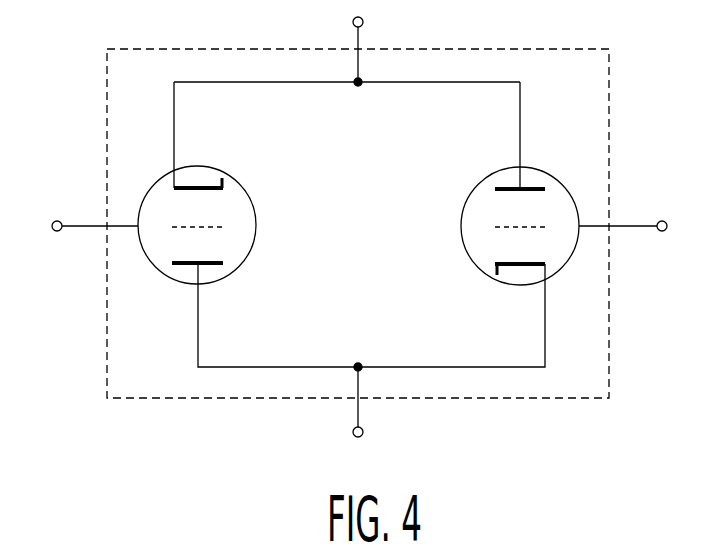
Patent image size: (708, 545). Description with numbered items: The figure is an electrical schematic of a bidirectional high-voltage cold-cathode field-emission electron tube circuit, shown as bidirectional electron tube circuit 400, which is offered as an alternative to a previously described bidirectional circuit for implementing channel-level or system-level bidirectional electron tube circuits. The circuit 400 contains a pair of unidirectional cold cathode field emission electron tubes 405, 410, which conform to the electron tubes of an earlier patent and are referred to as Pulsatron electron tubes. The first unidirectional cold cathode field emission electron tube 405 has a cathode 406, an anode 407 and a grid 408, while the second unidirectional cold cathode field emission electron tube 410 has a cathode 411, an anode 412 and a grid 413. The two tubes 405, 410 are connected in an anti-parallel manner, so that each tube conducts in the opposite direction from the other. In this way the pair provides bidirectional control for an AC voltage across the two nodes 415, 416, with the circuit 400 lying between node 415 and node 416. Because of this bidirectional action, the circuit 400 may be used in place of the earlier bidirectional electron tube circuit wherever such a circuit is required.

The bidirectional electron tube circuit 400 is at (104, 92).
The unidirectional cold cathode field emission electron tube 405 is at (222, 231).
The cathode 406 is at (208, 185).
The anode 407 is at (185, 268).
The grid 408 is at (84, 224).
The unidirectional cold cathode field emission electron tube 410 is at (498, 221).
The cathode 411 is at (509, 268).
The anode 412 is at (535, 188).
The grid 413 is at (629, 222).
The node 415 is at (352, 22).
The node 416 is at (364, 430).